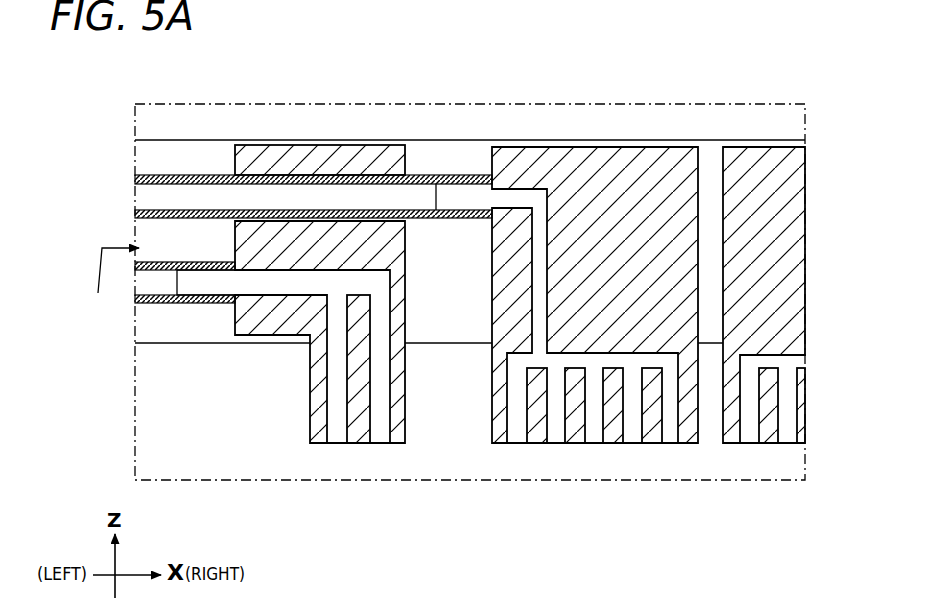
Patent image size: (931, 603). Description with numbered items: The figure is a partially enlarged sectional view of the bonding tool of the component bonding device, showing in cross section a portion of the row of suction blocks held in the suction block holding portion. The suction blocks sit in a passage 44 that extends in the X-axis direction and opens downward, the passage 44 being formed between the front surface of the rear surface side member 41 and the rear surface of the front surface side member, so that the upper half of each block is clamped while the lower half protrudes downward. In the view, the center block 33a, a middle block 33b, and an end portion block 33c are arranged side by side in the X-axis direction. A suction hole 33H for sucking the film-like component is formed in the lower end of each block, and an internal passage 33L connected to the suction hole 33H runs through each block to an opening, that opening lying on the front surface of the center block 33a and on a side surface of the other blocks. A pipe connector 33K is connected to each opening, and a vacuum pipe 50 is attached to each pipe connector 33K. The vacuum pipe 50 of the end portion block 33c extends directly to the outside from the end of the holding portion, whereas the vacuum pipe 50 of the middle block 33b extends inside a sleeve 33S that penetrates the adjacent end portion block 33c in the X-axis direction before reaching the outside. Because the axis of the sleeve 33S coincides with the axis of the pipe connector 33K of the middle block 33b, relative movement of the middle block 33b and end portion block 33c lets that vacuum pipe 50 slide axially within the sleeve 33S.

The rear surface side member 41 is at (550, 120).
The passage 44 is at (109, 284).
The vacuum pipe 50 is at (200, 193).
The sleeve 33S is at (366, 171).
The pipe connector 33K is at (463, 193).
The internal passage 33L is at (520, 318).
The center block 33a is at (732, 447).
The middle block 33b is at (562, 338).
The end portion block 33c is at (320, 378).
The suction hole 33H is at (377, 444).